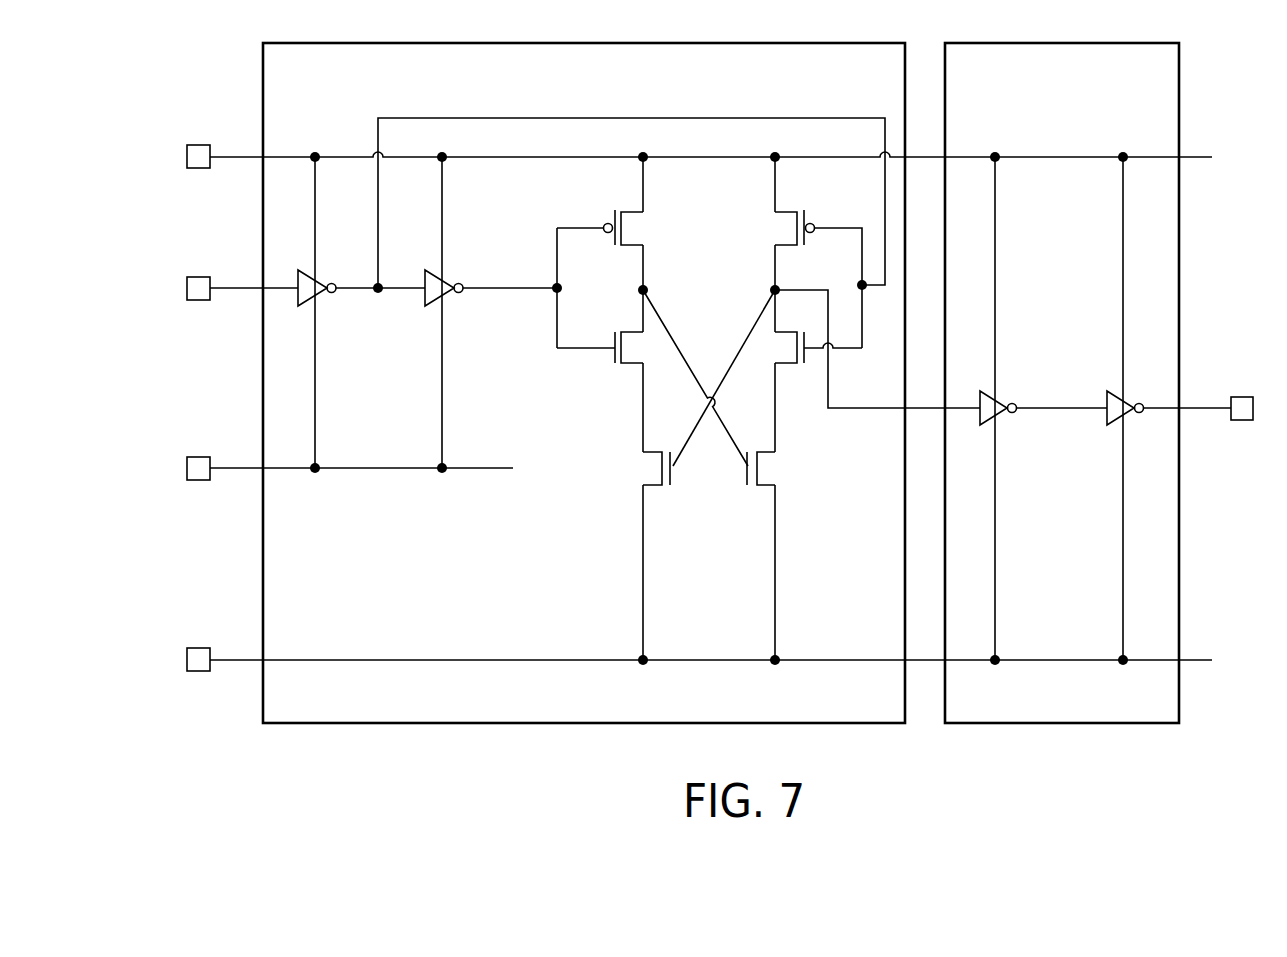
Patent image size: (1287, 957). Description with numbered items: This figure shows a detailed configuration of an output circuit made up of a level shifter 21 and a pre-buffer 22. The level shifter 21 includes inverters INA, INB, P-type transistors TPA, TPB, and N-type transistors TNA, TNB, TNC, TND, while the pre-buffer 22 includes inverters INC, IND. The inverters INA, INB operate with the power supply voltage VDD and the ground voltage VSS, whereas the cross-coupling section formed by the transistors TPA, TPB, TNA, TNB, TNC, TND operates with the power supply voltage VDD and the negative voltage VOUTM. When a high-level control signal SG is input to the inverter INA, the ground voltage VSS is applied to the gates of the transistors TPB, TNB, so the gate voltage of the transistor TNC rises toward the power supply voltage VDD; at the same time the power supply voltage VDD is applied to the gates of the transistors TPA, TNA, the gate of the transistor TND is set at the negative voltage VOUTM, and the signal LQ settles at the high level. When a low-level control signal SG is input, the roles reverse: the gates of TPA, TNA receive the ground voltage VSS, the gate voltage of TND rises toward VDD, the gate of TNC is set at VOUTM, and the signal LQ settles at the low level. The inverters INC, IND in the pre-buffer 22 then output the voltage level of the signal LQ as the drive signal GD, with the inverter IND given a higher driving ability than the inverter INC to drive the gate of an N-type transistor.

The level shifter 21 is at (581, 42).
The pre-buffer 22 is at (1062, 42).
The power supply voltage VDD is at (173, 157).
The control signal SG is at (180, 289).
The ground voltage VSS is at (174, 469).
The negative voltage VOUTM is at (161, 660).
The drive signal GD is at (1259, 409).
The inverter INA is at (324, 282).
The inverter INB is at (452, 282).
The inverter INC is at (1010, 402).
The inverter IND is at (1137, 402).
The P-type transistor TPA is at (600, 222).
The P-type transistor TPB is at (818, 273).
The N-type transistor TNA is at (600, 341).
The N-type transistor TNB is at (818, 363).
The N-type transistor TNC is at (635, 468).
The N-type transistor TND is at (782, 468).
The signal LQ is at (840, 349).